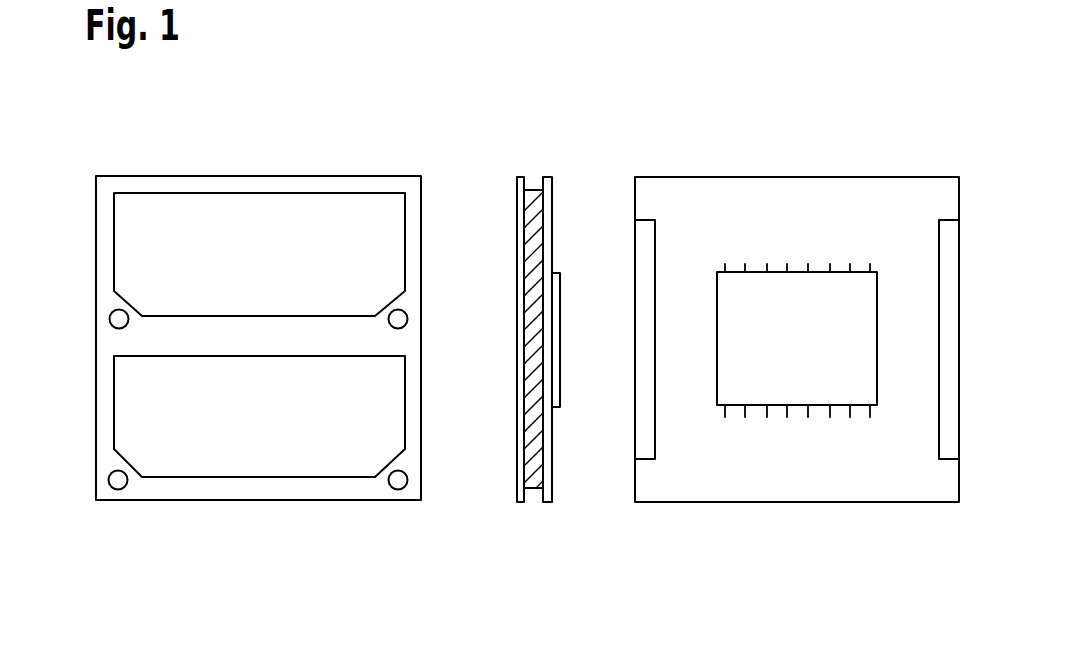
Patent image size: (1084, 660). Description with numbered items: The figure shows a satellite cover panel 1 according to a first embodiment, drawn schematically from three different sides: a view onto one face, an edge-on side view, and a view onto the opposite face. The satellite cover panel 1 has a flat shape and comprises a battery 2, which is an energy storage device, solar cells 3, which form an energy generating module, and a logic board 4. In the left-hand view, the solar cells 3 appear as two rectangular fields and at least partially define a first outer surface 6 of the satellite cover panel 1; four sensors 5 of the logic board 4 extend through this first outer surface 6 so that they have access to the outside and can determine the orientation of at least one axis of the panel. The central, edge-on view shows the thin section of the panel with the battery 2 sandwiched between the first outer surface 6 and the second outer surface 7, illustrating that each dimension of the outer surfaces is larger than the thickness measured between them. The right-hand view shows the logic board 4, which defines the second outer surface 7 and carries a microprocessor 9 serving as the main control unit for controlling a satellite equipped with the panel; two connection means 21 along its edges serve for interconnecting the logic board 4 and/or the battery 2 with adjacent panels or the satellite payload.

The satellite cover panel 1 is at (163, 136).
The battery 2 is at (533, 190).
The solar cells 3 is at (274, 233).
The logic board 4 is at (748, 233).
The sensors 5 is at (118, 319).
The first outer surface 6 is at (336, 193).
The second outer surface 7 is at (553, 455).
The microprocessor 9 is at (557, 292).
The connection means 21 is at (645, 236).